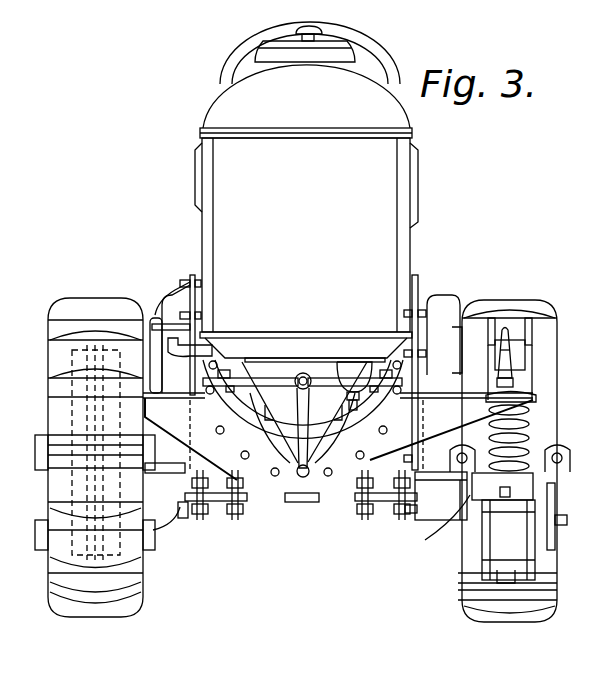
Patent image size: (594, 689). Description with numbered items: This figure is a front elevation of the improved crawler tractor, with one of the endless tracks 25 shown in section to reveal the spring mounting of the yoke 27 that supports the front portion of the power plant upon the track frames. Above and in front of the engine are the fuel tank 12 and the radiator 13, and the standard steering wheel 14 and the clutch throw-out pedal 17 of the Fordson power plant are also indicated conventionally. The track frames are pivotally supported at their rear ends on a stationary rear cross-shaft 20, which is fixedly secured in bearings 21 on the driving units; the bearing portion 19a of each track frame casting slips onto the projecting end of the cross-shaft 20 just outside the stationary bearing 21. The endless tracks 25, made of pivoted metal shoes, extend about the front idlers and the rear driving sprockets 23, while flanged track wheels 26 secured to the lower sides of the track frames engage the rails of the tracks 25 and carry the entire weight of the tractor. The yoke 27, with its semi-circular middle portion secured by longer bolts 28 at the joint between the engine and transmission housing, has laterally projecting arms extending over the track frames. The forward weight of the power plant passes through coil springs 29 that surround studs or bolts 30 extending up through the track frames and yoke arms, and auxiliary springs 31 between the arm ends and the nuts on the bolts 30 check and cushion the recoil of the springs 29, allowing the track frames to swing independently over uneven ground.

The fuel tank 12 is at (306, 82).
The radiator 13 is at (380, 243).
The steering wheel 14 is at (388, 40).
The clutch throw-out pedal 17 is at (152, 318).
The bearing portion 19a is at (452, 498).
The rear cross-shaft 20 is at (340, 495).
The bearings 21 is at (222, 505).
The rear driving sprockets 23 is at (510, 372).
The endless tracks 25 is at (125, 308).
The flanged track wheels 26 is at (528, 540).
The yoke 27 is at (338, 436).
The bolts 28 is at (272, 470).
The coil springs 29 is at (530, 440).
The studs or bolts 30 is at (520, 384).
The auxiliary springs 31 is at (536, 392).